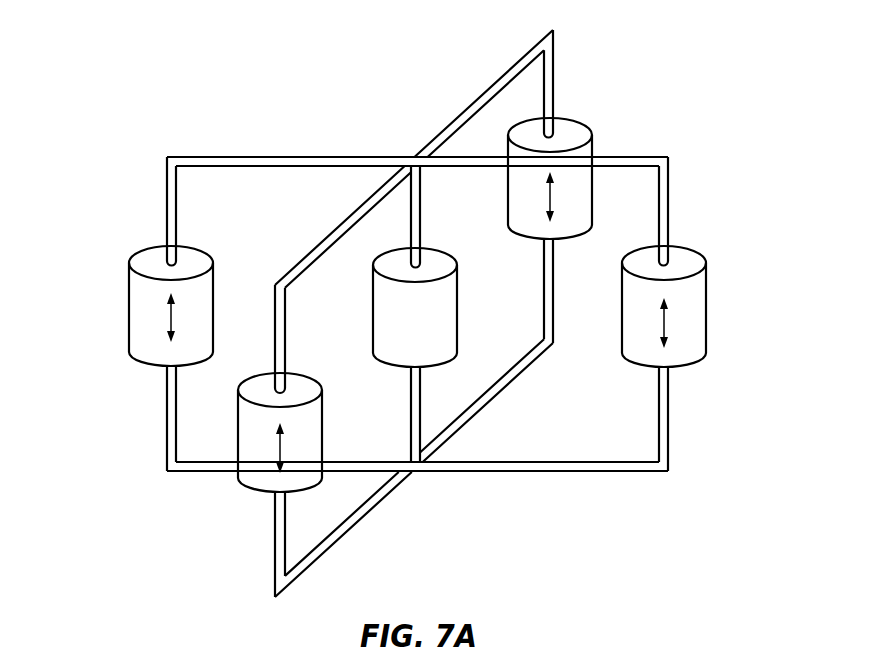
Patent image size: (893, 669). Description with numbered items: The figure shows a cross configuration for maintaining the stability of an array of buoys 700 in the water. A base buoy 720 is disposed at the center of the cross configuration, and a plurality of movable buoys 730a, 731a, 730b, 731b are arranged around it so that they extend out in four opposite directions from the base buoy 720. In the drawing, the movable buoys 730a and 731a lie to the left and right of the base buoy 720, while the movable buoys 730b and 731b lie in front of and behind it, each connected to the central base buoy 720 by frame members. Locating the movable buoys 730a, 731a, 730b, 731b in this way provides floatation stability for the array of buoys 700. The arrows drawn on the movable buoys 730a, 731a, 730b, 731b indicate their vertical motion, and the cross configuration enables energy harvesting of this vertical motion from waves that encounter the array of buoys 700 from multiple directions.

The array of buoys 700 is at (320, 57).
The base buoy 720 is at (433, 315).
The movable buoy 730a is at (140, 312).
The movable buoy 730b is at (256, 480).
The movable buoy 731a is at (693, 307).
The movable buoy 731b is at (582, 133).